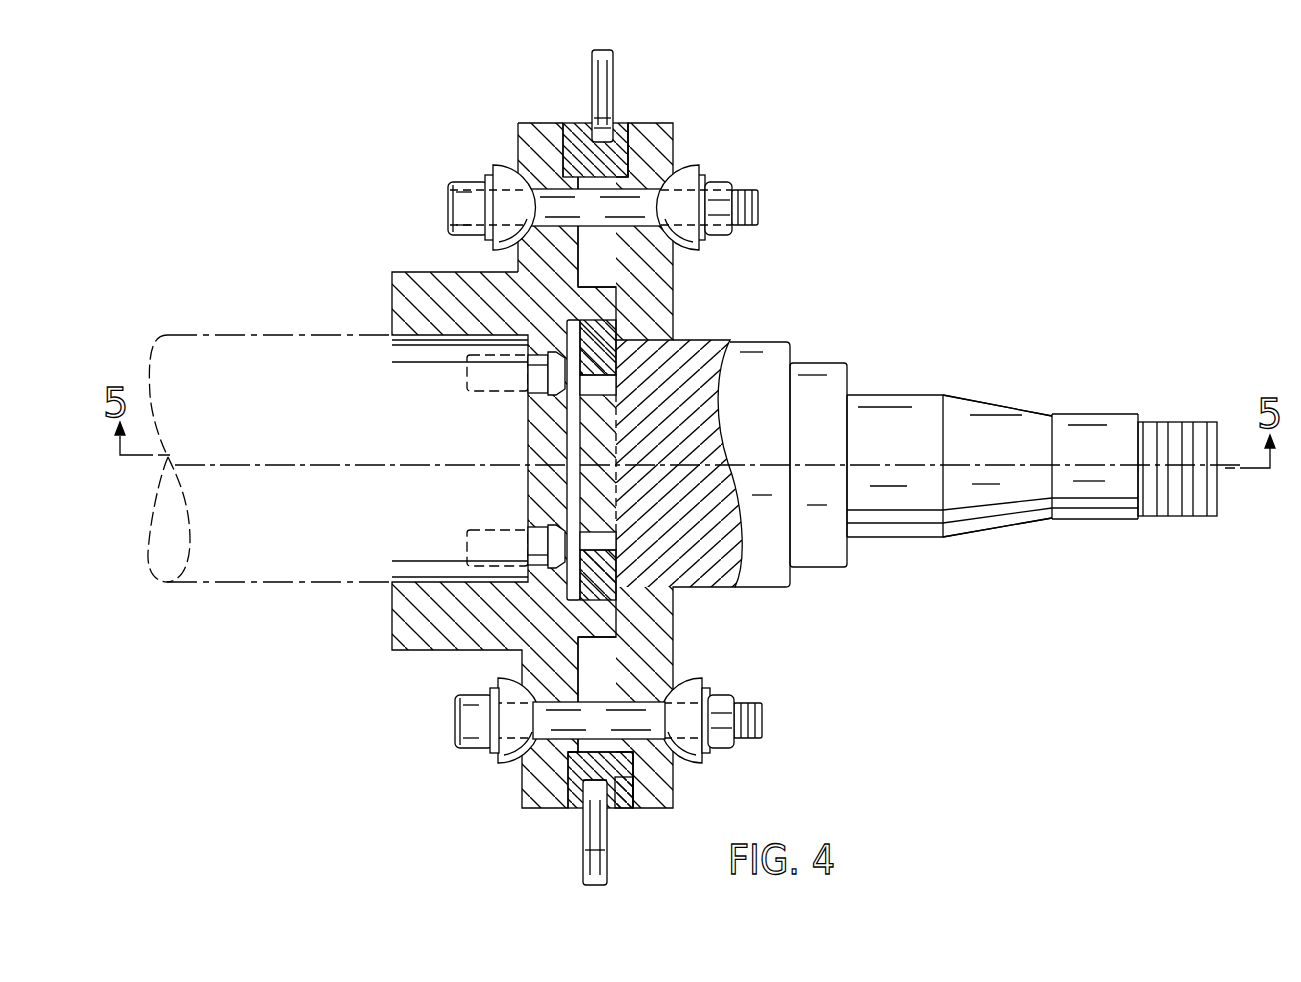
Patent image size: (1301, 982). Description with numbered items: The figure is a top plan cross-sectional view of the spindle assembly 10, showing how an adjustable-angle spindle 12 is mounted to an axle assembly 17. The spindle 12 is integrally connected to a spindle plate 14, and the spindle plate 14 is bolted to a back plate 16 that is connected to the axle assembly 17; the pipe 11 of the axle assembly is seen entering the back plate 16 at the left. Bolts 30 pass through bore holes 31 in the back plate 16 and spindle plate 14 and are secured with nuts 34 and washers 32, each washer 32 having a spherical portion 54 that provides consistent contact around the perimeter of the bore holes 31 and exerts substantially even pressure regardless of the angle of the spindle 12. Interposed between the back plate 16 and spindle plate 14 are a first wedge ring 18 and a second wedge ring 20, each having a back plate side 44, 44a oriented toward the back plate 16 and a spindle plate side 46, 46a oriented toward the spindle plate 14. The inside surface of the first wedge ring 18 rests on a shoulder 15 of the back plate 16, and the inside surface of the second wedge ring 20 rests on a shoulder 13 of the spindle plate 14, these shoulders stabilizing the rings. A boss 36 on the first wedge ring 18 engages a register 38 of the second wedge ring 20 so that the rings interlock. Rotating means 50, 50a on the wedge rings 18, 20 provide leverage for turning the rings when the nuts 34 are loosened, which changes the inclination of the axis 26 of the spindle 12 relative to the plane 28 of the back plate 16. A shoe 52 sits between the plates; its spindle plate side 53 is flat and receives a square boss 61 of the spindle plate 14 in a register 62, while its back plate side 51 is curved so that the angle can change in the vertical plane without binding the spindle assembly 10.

The spindle assembly 10 is at (832, 130).
The pipe 11 is at (270, 458).
The spindle 12 is at (977, 402).
The shoulder 13 is at (620, 187).
The spindle plate 14 is at (663, 128).
The shoulder 15 is at (567, 183).
The back plate 16 is at (537, 127).
The axle assembly 17 is at (425, 650).
The first wedge ring 18 is at (558, 147).
The second wedge ring 20 is at (637, 157).
The axis 26 is at (1008, 467).
The plane 28 is at (605, 815).
The bolt 30 is at (767, 720).
The bore hole 31 is at (513, 227).
The washer 32 is at (699, 670).
The nut 34 is at (723, 694).
The boss 36 is at (670, 798).
The register 38 is at (615, 763).
The back plate side 44 is at (540, 808).
The back plate side 44a is at (578, 150).
The spindle plate side 46 is at (625, 810).
The spindle plate side 46a is at (653, 808).
The rotating means 50 is at (587, 847).
The rotating means 50a is at (603, 78).
The back plate side 51 is at (532, 557).
The shoe 52 is at (620, 350).
The spindle plate side 53 is at (545, 562).
The spherical portion 54 is at (512, 757).
The square boss 61 is at (592, 484).
The register 62 is at (585, 378).